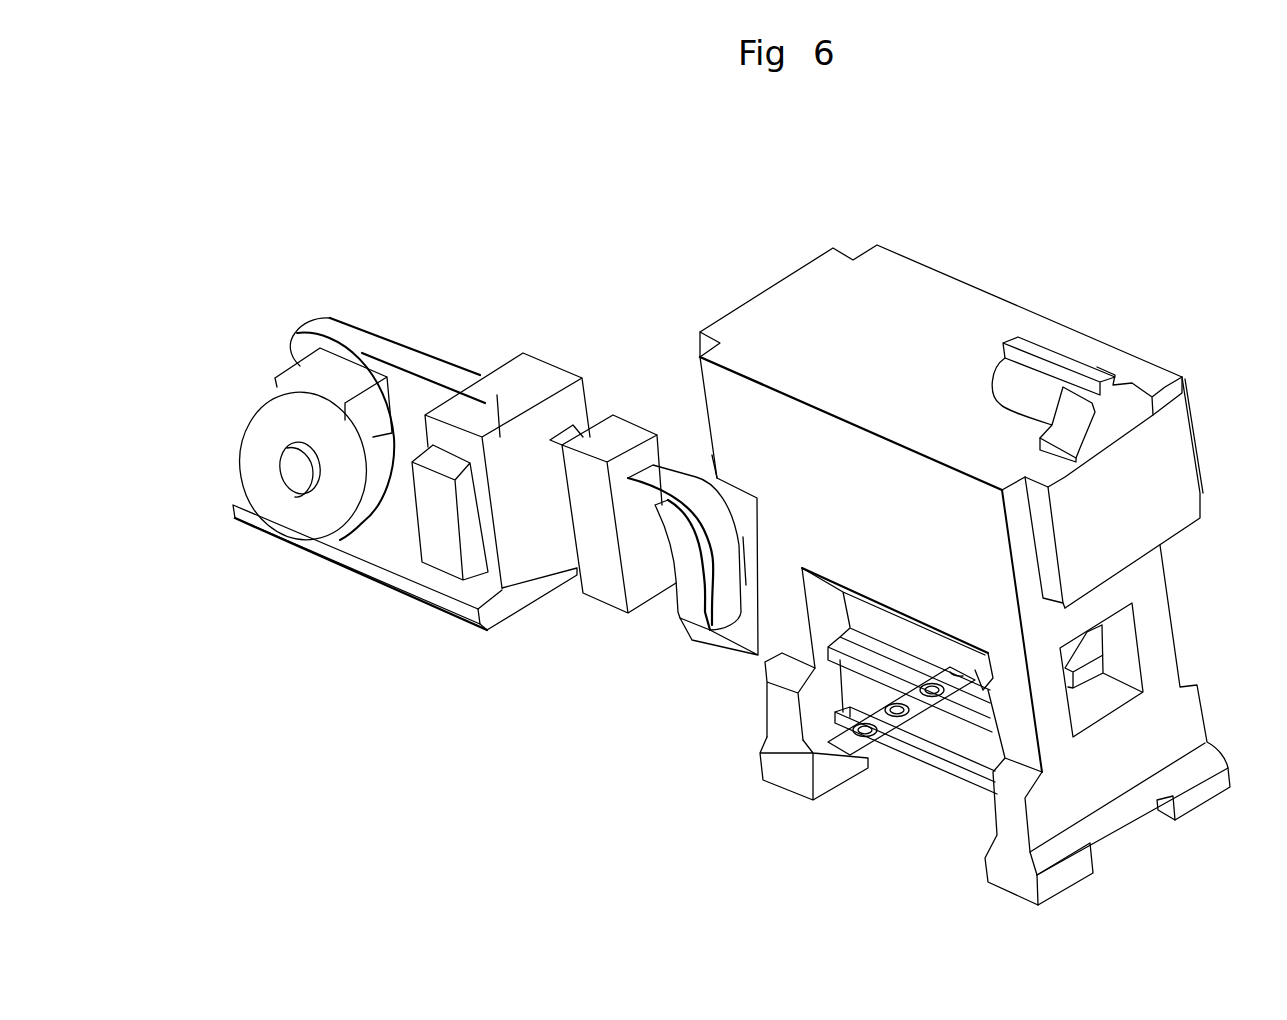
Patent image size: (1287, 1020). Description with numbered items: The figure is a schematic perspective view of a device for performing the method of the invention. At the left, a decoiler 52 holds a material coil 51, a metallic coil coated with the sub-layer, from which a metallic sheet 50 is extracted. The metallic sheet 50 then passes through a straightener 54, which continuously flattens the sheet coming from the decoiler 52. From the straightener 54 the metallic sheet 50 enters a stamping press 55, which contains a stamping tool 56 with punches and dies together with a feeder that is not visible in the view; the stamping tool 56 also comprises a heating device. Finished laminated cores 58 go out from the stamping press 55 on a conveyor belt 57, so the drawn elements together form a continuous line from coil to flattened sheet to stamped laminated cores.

The metallic sheet 50 is at (438, 358).
The material coil 51 is at (310, 315).
The decoiler 52 is at (302, 367).
The straightener 54 is at (615, 427).
The stamping press 55 is at (913, 258).
The stamping tool 56 is at (877, 623).
The conveyor belt 57 is at (842, 742).
The finished laminated cores 58 is at (927, 700).